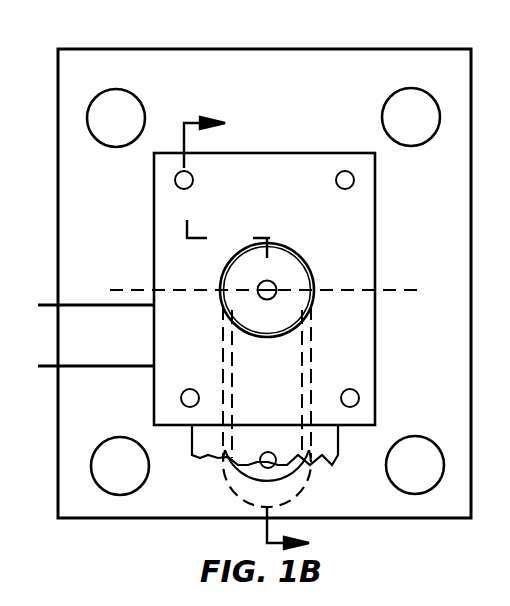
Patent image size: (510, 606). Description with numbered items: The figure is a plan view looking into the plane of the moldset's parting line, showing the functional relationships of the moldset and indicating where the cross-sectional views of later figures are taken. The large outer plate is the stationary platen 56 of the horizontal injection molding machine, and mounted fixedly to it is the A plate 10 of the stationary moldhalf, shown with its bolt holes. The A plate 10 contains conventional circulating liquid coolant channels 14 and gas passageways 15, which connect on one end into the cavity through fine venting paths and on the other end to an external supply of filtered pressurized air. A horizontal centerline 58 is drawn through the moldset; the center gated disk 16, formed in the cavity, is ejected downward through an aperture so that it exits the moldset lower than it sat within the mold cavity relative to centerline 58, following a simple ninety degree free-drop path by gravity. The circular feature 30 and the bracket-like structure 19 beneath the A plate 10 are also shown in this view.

The stationary platen 56 is at (167, 63).
The A plate 10 is at (162, 197).
The optical window 30 is at (288, 262).
The horizontal centerline 58 is at (392, 289).
The gas passageways 15 is at (102, 307).
The circulating liquid coolant channels 14 is at (107, 367).
The mounting bracket 19 is at (338, 438).
The center gated disk 16 is at (242, 480).